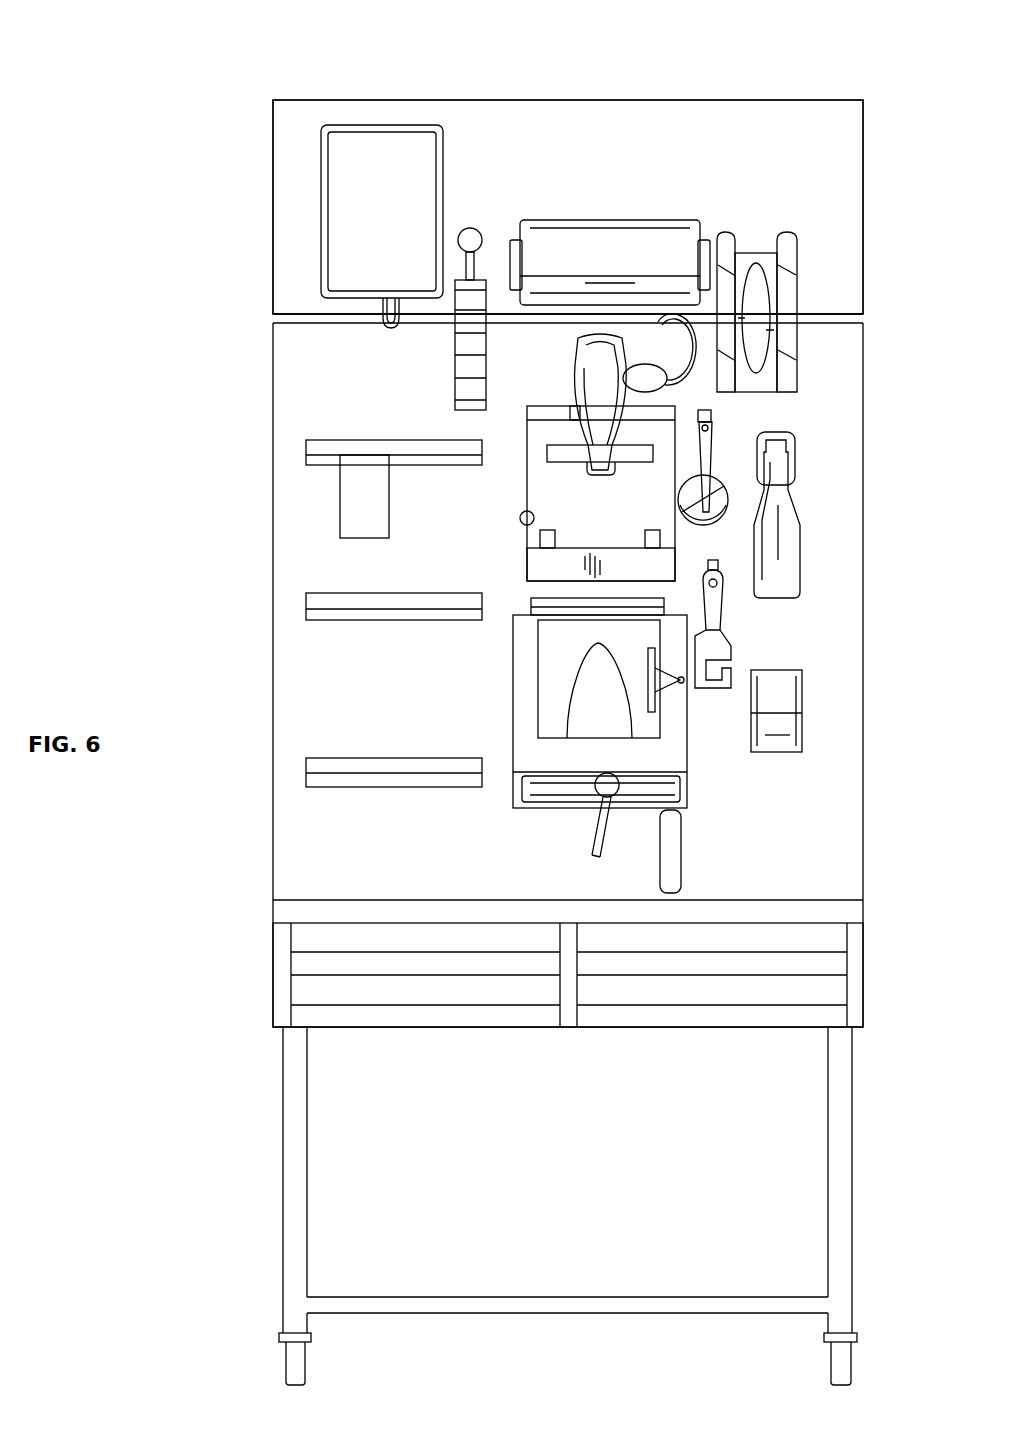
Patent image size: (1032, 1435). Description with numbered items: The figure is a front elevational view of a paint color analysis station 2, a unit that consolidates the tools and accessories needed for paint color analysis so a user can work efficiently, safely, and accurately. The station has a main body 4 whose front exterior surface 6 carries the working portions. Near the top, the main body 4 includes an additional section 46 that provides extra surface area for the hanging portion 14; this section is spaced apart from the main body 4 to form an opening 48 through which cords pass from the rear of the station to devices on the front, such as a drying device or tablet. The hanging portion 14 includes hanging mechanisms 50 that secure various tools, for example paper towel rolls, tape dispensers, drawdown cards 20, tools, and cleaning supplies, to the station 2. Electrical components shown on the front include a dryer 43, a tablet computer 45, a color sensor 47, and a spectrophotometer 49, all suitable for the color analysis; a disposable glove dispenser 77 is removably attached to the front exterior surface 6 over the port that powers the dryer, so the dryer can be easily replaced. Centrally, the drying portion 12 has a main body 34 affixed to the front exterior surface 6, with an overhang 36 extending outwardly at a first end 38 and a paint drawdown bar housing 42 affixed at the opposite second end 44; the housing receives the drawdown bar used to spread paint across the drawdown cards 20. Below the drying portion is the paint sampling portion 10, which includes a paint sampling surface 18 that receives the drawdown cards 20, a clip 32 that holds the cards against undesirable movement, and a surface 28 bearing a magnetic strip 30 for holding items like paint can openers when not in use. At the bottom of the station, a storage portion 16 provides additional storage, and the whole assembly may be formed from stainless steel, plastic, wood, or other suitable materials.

The paint color analysis station 2 is at (782, 56).
The main body 4 is at (832, 393).
The front exterior surface 6 is at (835, 607).
The paint sampling portion 10 is at (706, 762).
The drying portion 12 is at (684, 548).
The hanging portion 14 is at (812, 492).
The storage portion 16 is at (880, 963).
The paint sampling surface 18 is at (524, 722).
The drawdown cards 20 is at (548, 665).
The surface 28 is at (525, 803).
The magnetic strip 30 is at (680, 790).
The clip 32 is at (672, 690).
The main body of drying portion 34 is at (552, 492).
The overhang 36 is at (550, 450).
The first end 38 is at (572, 407).
The paint drawdown bar housing 42 is at (528, 566).
The dryer 43 is at (444, 158).
The second end 44 is at (528, 590).
The tablet computer 45 is at (600, 336).
The additional section 46 is at (822, 180).
The color sensor 47 is at (710, 500).
The opening 48 is at (826, 316).
The spectrophotometer 49 is at (527, 518).
The hanging mechanisms 50 is at (476, 236).
The disposable glove dispenser 77 is at (798, 280).